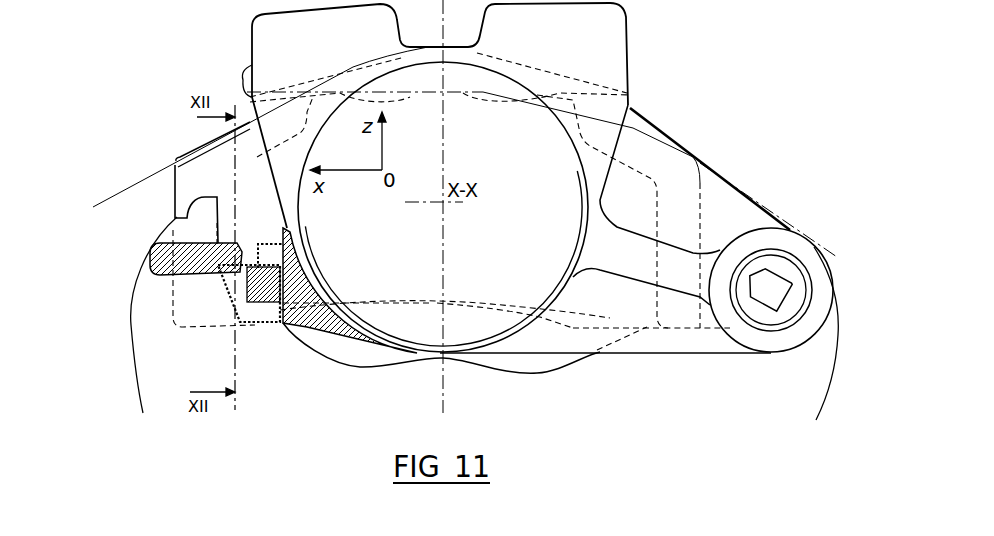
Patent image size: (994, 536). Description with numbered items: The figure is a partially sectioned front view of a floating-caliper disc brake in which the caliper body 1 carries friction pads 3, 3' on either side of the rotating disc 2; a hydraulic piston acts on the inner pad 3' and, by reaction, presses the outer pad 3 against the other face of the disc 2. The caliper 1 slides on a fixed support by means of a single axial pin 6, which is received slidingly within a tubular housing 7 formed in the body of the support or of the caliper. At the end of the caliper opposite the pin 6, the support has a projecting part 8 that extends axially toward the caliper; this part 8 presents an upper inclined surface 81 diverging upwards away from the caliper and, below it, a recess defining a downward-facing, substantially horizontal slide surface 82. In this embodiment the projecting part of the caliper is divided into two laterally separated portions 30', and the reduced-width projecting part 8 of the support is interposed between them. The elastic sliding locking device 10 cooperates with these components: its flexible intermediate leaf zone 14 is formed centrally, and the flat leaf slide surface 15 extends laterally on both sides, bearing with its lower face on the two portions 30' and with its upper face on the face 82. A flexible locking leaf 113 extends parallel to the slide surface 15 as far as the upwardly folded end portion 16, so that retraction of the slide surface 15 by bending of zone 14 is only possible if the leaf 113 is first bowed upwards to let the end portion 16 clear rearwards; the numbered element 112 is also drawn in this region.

The caliper body 1 is at (641, 66).
The rotating disc 2 is at (125, 180).
The outer friction pad 3 is at (636, 161).
The inner friction pad 3' is at (762, 190).
The axial pin 6 is at (757, 327).
The tubular housing 7 is at (767, 233).
The projecting part 8 is at (178, 258).
The elastic sliding locking device 10 is at (284, 335).
The flexible intermediate leaf zone 14 is at (225, 323).
The flat leaf slide surface 15 is at (243, 257).
The upwardly folded end portion 16 is at (263, 240).
The caliper projecting portions 30' is at (262, 323).
The upper inclined surface 81 is at (218, 225).
The slide surface 82 is at (255, 288).
The housing web 112 is at (290, 255).
The flexible locking leaf 113 is at (257, 247).